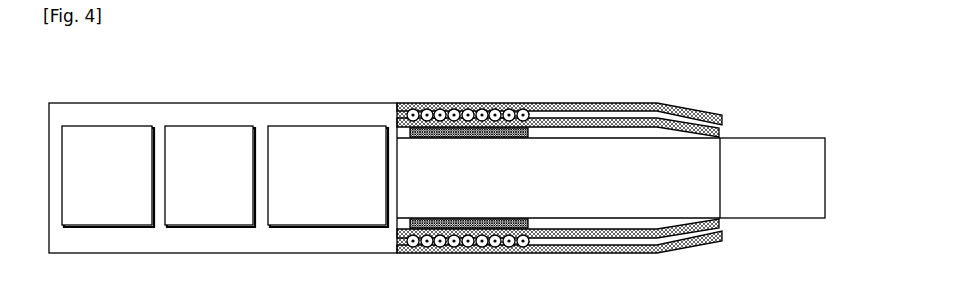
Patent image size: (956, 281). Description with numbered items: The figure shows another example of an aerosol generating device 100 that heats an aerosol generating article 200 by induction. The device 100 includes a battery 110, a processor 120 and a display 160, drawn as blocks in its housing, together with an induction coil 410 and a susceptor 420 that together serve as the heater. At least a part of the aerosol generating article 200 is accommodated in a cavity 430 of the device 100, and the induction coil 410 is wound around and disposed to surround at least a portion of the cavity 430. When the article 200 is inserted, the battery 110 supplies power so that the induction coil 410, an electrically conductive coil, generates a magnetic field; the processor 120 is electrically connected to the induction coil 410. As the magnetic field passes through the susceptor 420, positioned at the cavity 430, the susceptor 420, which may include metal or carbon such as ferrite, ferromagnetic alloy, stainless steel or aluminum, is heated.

The aerosol generating device 100 is at (586, 96).
The battery 110 is at (210, 126).
The processor 120 is at (322, 126).
The display 160 is at (107, 126).
The aerosol generating article 200 is at (775, 122).
The induction coil 410 is at (523, 109).
The susceptor 420 is at (463, 109).
The cavity 430 is at (632, 130).